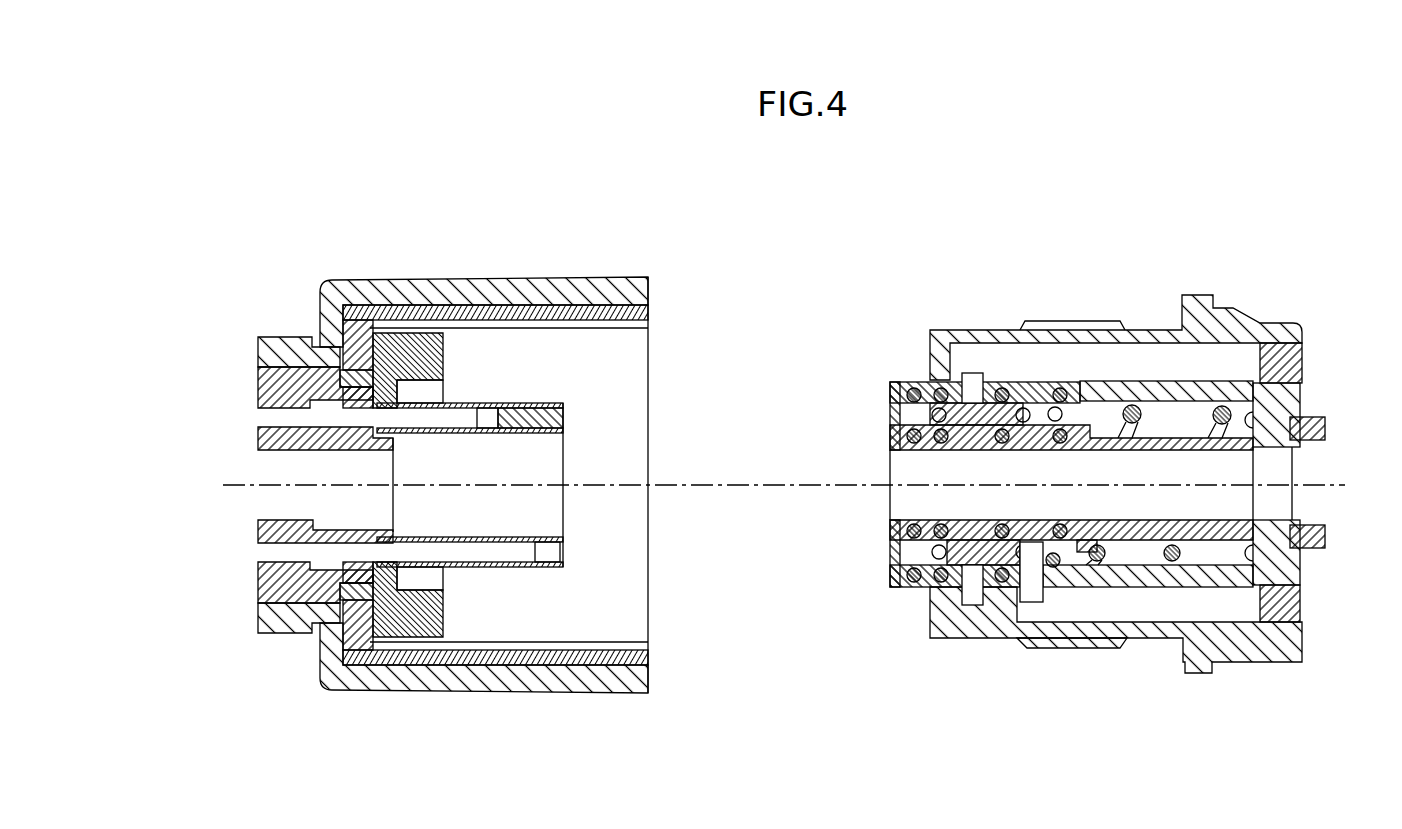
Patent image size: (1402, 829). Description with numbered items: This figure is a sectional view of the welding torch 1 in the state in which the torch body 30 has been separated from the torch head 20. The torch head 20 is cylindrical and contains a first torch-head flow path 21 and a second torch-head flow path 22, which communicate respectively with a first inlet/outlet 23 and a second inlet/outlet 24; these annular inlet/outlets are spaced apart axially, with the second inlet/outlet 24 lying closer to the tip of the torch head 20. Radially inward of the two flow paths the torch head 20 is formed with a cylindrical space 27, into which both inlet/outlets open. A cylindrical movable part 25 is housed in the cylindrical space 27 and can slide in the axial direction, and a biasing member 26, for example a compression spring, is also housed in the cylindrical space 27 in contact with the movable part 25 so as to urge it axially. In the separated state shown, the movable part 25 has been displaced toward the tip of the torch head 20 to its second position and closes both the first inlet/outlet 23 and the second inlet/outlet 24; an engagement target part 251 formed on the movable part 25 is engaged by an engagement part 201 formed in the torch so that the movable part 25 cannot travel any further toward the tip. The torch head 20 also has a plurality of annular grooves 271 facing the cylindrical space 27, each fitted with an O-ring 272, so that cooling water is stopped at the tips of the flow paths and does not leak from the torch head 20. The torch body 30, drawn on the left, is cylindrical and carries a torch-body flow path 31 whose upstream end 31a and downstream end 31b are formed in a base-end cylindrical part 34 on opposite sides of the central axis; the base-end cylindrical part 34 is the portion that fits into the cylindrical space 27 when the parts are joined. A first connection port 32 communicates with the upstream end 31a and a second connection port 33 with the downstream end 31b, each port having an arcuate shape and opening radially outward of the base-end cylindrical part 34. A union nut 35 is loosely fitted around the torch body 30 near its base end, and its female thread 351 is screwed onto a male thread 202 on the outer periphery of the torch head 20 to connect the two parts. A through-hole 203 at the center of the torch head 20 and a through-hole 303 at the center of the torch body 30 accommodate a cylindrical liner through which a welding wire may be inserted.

The connector assembly 1 is at (352, 147).
The torch head 20 is at (1210, 284).
The first torch-head flow path 21 is at (1146, 615).
The second torch-head flow path 22 is at (1092, 350).
The first inlet/outlet 23 is at (1033, 590).
The second inlet/outlet 24 is at (955, 385).
The movable part 25 is at (997, 382).
The biasing member 26 is at (1134, 404).
The cylindrical space 27 is at (1153, 560).
The engagement part 201 is at (1072, 592).
The male thread 202 is at (1050, 648).
The through-hole 203 is at (1235, 470).
The engagement target part 251 is at (1080, 556).
The annular grooves 271 is at (1005, 378).
The O-ring 272 is at (985, 380).
The torch body 30 is at (282, 330).
The torch-body flow path 31 is at (382, 632).
The upstream end 31a is at (433, 556).
The downstream end 31b is at (460, 410).
The first connection port 32 is at (548, 557).
The second connection port 33 is at (490, 400).
The base-end cylindrical part 34 is at (540, 402).
The union nut 35 is at (612, 290).
The through-hole 303 is at (305, 450).
The female thread 351 is at (598, 642).